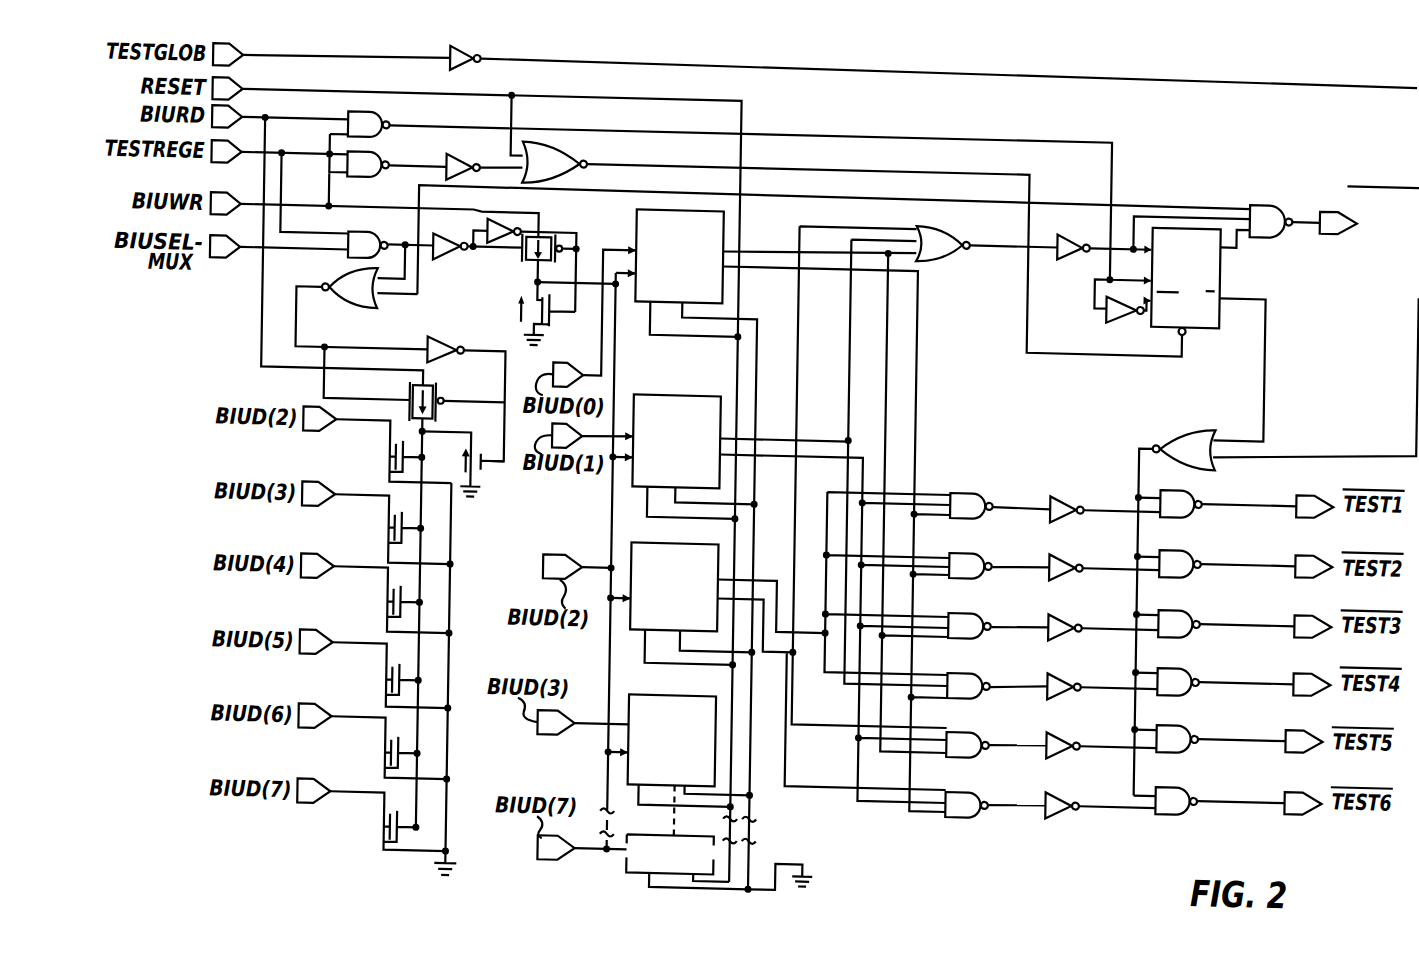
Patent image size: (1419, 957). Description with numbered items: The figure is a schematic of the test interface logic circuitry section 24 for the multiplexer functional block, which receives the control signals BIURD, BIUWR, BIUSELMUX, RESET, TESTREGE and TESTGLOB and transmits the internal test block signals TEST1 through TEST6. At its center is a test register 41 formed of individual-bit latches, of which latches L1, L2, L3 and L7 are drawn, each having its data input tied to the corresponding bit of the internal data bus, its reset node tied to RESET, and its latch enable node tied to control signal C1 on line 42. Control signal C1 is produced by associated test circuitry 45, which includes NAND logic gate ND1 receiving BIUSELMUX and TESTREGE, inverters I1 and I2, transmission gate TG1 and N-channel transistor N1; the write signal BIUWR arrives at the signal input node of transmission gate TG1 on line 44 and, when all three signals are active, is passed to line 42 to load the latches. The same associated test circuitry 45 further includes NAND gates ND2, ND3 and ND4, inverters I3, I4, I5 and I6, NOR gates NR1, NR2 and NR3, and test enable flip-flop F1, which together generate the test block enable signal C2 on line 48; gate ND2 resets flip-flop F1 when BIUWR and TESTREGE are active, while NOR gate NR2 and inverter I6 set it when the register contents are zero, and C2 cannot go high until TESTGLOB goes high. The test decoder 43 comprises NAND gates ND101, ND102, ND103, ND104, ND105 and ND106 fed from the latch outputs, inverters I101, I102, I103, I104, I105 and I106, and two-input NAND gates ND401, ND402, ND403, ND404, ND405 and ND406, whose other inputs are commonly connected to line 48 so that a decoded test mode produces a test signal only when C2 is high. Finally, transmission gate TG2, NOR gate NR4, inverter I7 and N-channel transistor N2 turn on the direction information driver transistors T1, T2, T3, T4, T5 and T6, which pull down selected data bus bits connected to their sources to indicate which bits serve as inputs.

The inverter I5 is at (450, 52).
The test interface logic circuitry section 24 is at (877, 50).
The NAND logic gate ND3 is at (372, 120).
The NAND logic gate ND2 is at (374, 160).
The inverter I3 is at (458, 151).
The NOR logic gate NR1 is at (580, 156).
The associated test circuitry 45 is at (323, 214).
The line 44 is at (404, 203).
The NAND logic gate ND1 is at (345, 243).
The inverter I1 is at (446, 268).
The inverter I2 is at (520, 218).
The transmission gate TG1 is at (519, 266).
The N-channel transistor N1 is at (537, 319).
The NOR logic gate NR4 is at (342, 317).
The inverter I7 is at (448, 344).
The transmission gate TG2 is at (440, 401).
The N-channel transistor N2 is at (461, 488).
The N-channel control transistor T1 is at (390, 464).
The N-channel control transistor T2 is at (390, 535).
The N-channel control transistor T3 is at (390, 609).
The N-channel control transistor T4 is at (390, 687).
The N-channel control transistor T5 is at (390, 760).
The N-channel control transistor T6 is at (390, 834).
The line 42 is at (614, 372).
The test register 41 is at (605, 509).
The latch L1 is at (700, 397).
The latch L2 is at (660, 546).
The latch L3 is at (669, 698).
The latch L7 is at (660, 838).
The NOR logic gate NR2 is at (940, 258).
The inverter I6 is at (1067, 226).
The test enable flip-flop F1 is at (1218, 262).
The inverter I4 is at (1100, 310).
The NAND logic gate ND4 is at (1270, 192).
The NOR logic gate NR3 is at (1171, 419).
The line 48 is at (1138, 463).
The test decoder 43 is at (1033, 437).
The NAND logic gate ND101 is at (950, 487).
The NAND logic gate ND102 is at (950, 555).
The NAND logic gate ND103 is at (950, 615).
The NAND logic gate ND104 is at (950, 675).
The NAND logic gate ND105 is at (950, 734).
The NAND logic gate ND106 is at (950, 794).
The inverter I101 is at (1055, 489).
The inverter I102 is at (1053, 535).
The inverter I103 is at (1053, 595).
The inverter I104 is at (1052, 666).
The inverter I105 is at (1052, 725).
The inverter I106 is at (1050, 773).
The two-input NAND logic gate ND401 is at (1190, 484).
The two-input NAND logic gate ND402 is at (1176, 542).
The two-input NAND logic gate ND403 is at (1192, 600).
The two-input NAND logic gate ND404 is at (1184, 658).
The two-input NAND logic gate ND405 is at (1186, 720).
The two-input NAND logic gate ND406 is at (1192, 782).